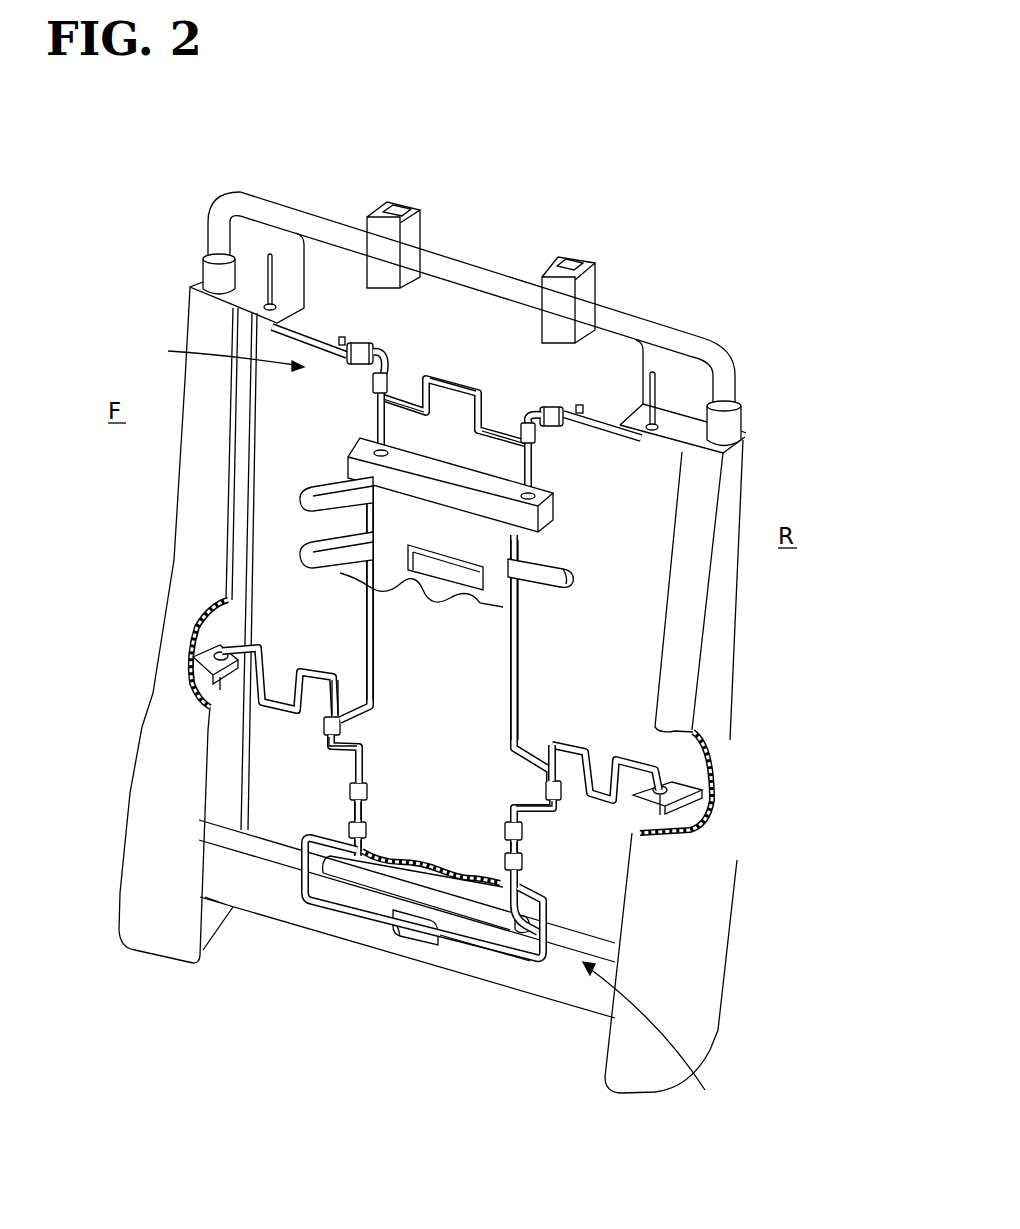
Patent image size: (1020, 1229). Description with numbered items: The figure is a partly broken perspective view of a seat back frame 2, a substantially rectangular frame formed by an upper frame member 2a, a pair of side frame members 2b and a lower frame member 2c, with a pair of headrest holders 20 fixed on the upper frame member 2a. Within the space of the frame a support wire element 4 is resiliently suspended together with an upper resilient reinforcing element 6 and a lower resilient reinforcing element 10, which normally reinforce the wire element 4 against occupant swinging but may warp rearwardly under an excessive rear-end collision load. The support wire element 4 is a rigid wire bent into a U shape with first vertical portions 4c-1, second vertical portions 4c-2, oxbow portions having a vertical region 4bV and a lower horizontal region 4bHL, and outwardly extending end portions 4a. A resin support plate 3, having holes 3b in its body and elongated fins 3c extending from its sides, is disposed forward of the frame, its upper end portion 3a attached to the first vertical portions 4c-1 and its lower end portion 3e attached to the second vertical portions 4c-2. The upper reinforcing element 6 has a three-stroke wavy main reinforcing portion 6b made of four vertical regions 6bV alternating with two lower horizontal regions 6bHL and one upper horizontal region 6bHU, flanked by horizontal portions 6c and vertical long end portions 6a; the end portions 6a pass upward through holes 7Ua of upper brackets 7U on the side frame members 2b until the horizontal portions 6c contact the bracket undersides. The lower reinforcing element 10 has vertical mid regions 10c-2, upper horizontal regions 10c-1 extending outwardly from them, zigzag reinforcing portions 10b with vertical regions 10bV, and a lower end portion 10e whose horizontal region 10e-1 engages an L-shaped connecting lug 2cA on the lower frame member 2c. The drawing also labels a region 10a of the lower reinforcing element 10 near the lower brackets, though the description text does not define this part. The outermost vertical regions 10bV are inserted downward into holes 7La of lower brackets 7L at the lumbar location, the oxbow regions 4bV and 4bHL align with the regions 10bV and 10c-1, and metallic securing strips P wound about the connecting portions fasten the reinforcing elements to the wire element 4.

The seat back frame 2 is at (755, 410).
The upper frame member 2a is at (284, 204).
The side frame member 2b is at (184, 513).
The lower frame member 2c is at (582, 982).
The connecting lug 2cA is at (406, 932).
The support plate 3 is at (325, 478).
The upper end portion 3a is at (465, 478).
The holes 3b is at (452, 571).
The elongated fins 3c is at (307, 549).
The lower end portion 3e is at (521, 932).
The support wire element 4 is at (530, 663).
The outwardly horizontally extending end portion 4a is at (344, 339).
The lower horizontal region 4bHL is at (362, 746).
The vertical region 4bV is at (344, 722).
The first rectilinearly-extending vertical portion 4c-1 is at (378, 425).
The second rectilinearly-extending vertical portion 4c-2 is at (366, 810).
The upper resilient reinforcing element 6 is at (225, 356).
The long end portion 6a is at (270, 254).
The main reinforcing portion 6b is at (545, 375).
The upper horizontal region 6bHU is at (468, 379).
The lower horizontal region 6bHL is at (395, 413).
The vertical region 6bV is at (376, 401).
The horizontal portion 6c is at (306, 334).
The lower bracket 7L is at (207, 658).
The hole 7La is at (214, 655).
The upper bracket 7U is at (195, 293).
The hole 7Ua is at (265, 300).
The lower resilient reinforcing element 10 is at (657, 1037).
The side bolster pad 10a is at (210, 706).
The reinforcing portion 10b is at (340, 668).
The vertical region 10bV is at (342, 688).
The upper horizontal region 10c-1 is at (334, 757).
The vertically-extending mid region 10c-2 is at (354, 772).
The lower end portion 10e is at (306, 897).
The horizontal region 10e-1 is at (490, 958).
The headrest holder 20 is at (391, 210).
The metallic securing strip P is at (389, 388).